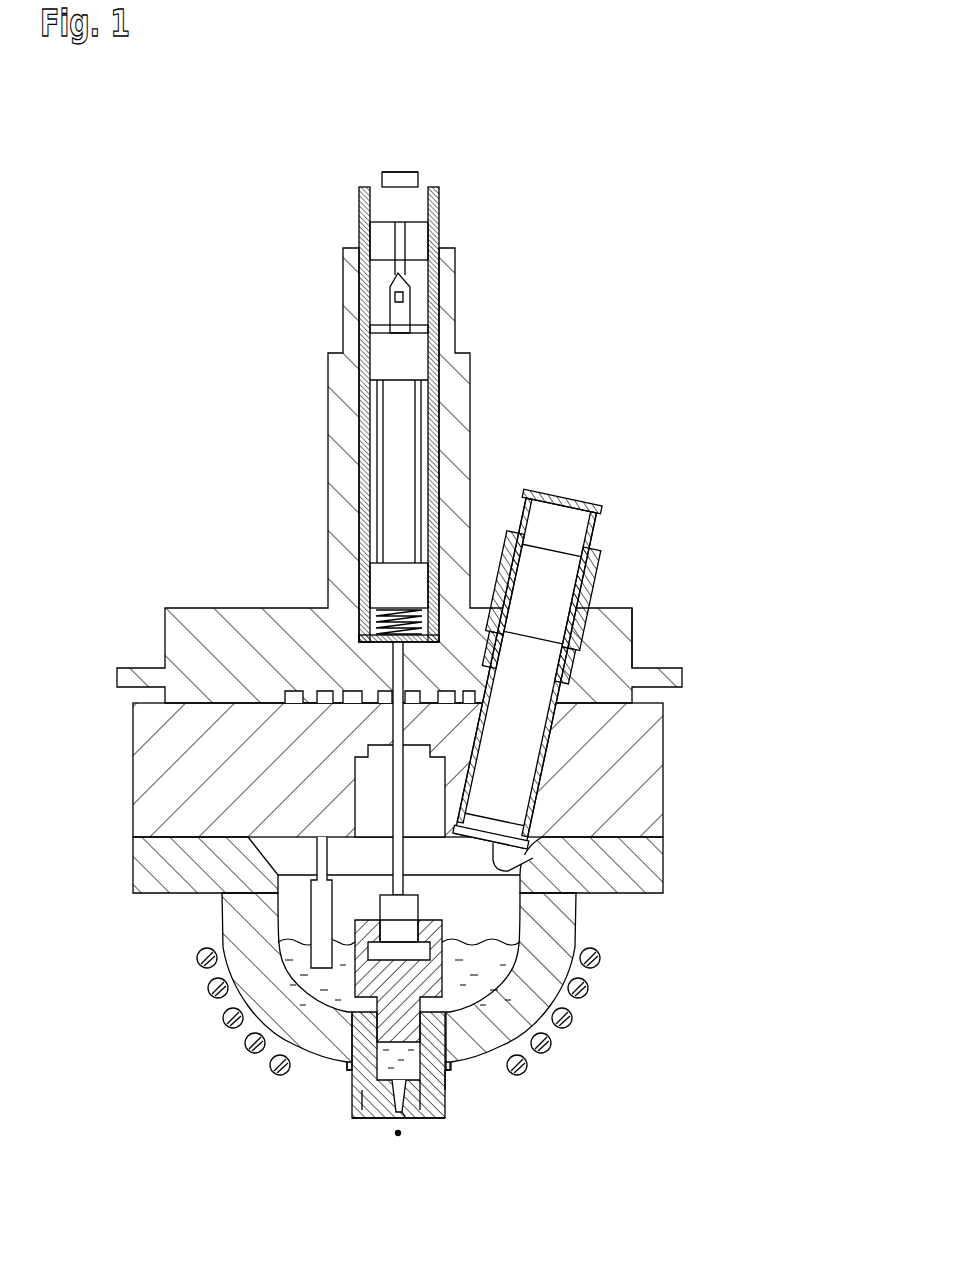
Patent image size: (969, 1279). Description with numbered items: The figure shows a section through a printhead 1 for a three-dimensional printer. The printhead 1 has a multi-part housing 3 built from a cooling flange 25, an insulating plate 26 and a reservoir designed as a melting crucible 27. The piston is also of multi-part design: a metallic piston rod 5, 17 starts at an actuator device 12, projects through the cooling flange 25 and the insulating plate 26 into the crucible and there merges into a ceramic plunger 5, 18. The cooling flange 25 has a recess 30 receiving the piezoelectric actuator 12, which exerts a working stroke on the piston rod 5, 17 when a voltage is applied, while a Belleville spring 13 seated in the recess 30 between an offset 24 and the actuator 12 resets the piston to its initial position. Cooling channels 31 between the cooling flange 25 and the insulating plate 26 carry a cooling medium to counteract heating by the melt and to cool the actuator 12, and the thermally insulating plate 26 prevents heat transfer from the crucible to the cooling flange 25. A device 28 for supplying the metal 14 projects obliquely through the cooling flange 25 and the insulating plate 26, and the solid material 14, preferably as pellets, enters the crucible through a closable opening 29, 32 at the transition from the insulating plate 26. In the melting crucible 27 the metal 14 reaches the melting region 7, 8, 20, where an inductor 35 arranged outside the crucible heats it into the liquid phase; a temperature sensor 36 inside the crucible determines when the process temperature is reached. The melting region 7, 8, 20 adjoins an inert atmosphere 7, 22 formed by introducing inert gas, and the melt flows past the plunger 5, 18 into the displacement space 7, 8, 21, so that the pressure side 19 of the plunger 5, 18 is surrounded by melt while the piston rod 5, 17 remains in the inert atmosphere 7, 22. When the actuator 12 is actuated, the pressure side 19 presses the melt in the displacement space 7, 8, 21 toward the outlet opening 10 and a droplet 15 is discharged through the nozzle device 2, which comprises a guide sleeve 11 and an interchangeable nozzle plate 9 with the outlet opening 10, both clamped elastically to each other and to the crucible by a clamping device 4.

The printhead 1 is at (560, 233).
The nozzle device 2 is at (347, 1124).
The housing 3 is at (706, 624).
The clamping device 4 is at (352, 1072).
The upper valve element / guide 5, 17 is at (400, 770).
The lower valve element / seat body 5, 18 is at (415, 968).
The fluid outlet passage 7, 8, 20 is at (452, 1068).
The fluid outlet passage 7, 8, 21 is at (360, 1063).
The fluid chamber 7, 22 is at (467, 888).
The nozzle plate 9 is at (430, 1106).
The outlet opening 10 is at (407, 1112).
The guide sleeve 11 is at (363, 1092).
The actuator device 12 is at (398, 413).
The spring 13 is at (440, 612).
The metal 14 is at (553, 580).
The droplet 15 is at (398, 1136).
The pressure side 19 is at (448, 1080).
The offset 24 is at (378, 646).
The cooling flange 25 is at (205, 627).
The insulating plate 26 is at (172, 810).
The melting crucible 27 is at (278, 1015).
The device for supplying a metal 28 is at (563, 525).
The passage 29, 32 is at (520, 870).
The recess 30 is at (432, 306).
The cooling channels 31 is at (325, 708).
The inductor 35 is at (618, 1073).
The sensor 36 is at (320, 928).